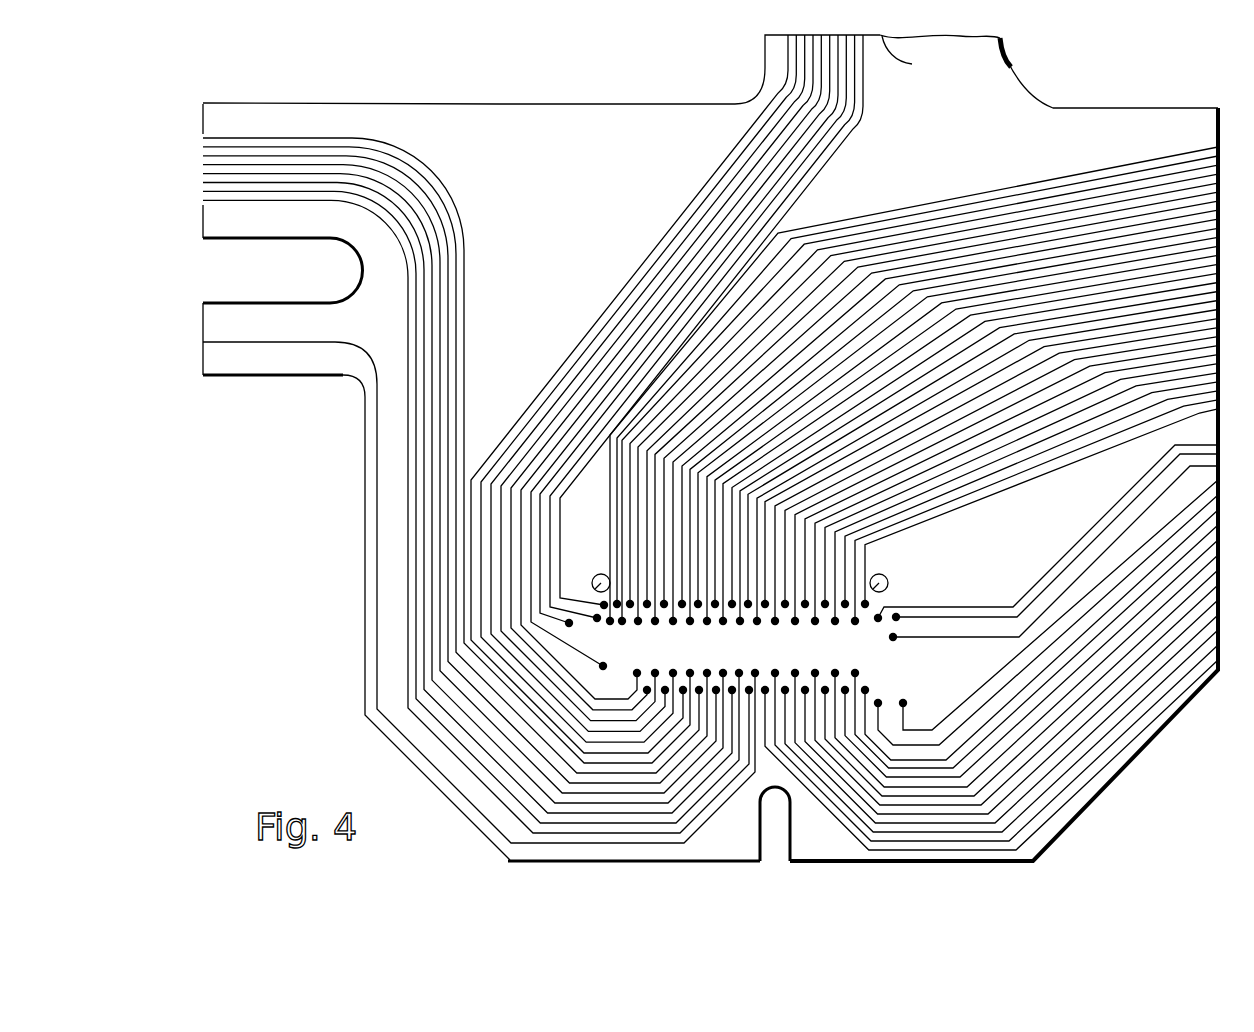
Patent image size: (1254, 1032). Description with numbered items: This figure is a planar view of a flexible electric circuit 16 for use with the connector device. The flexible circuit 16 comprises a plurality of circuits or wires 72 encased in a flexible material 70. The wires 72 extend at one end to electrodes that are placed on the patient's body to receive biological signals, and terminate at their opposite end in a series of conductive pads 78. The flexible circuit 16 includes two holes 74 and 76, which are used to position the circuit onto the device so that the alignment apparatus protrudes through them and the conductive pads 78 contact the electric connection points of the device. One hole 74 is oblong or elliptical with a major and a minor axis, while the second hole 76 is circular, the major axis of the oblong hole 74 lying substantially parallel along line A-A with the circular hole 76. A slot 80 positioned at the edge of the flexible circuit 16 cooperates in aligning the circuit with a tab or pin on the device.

The flexible electric circuit 16 is at (710, 477).
The flexible material 70 is at (361, 376).
The circuits or wires 72 is at (693, 226).
The hole 74 is at (598, 576).
The hole 76 is at (885, 580).
The conductive pads 78 is at (640, 672).
The slot 80 is at (776, 830).